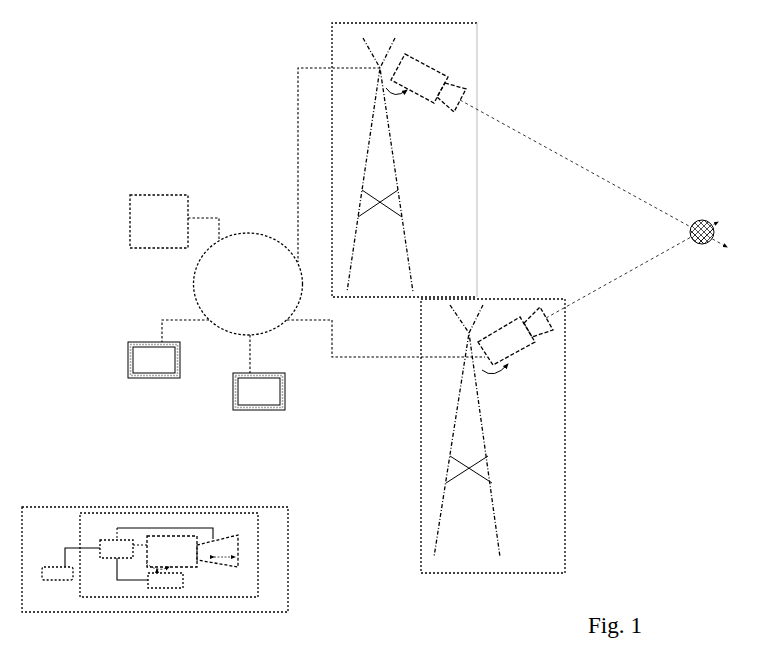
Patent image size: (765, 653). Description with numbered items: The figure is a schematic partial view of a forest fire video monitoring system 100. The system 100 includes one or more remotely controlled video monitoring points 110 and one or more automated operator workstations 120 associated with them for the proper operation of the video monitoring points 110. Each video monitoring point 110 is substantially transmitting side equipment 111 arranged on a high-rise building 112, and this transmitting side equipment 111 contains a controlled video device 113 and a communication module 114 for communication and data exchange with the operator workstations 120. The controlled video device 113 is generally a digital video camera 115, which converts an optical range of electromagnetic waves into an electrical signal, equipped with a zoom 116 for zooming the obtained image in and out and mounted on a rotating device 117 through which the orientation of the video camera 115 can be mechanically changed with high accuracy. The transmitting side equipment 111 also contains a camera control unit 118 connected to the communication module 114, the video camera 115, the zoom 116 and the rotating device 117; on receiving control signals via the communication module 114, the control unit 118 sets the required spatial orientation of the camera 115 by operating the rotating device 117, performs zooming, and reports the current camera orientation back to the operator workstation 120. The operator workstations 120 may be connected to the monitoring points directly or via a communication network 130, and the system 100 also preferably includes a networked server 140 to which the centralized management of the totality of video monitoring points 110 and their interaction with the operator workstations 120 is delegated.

The forest fire video monitoring system 100 is at (553, 22).
The video monitoring point 110 is at (448, 298).
The transmitting side equipment 111 is at (287, 333).
The high-rise building 112 is at (423, 297).
The controlled video device 113 is at (169, 555).
The communication module 114 is at (57, 574).
The digital video camera 115 is at (171, 554).
The zoom 116 is at (217, 551).
The rotating device 117 is at (165, 580).
The camera control unit 118 is at (106, 560).
The operator workstation 120 is at (206, 376).
The network 130 is at (248, 284).
The server 140 is at (159, 221).